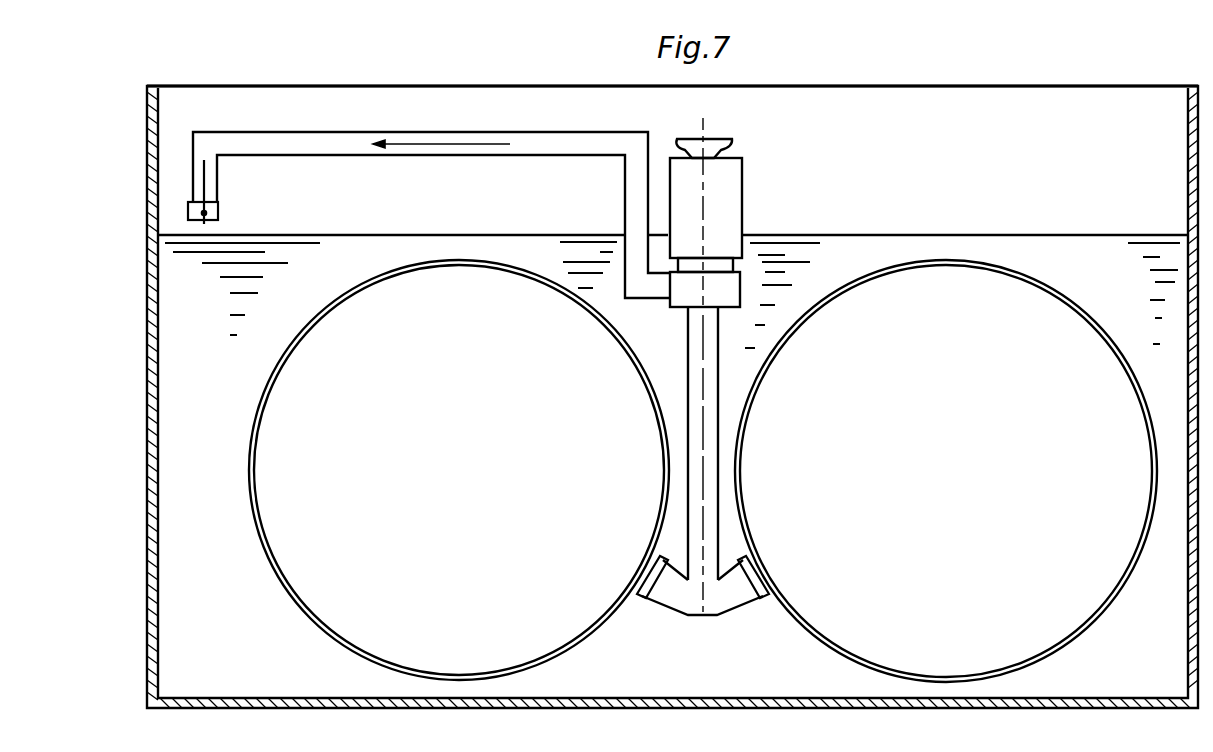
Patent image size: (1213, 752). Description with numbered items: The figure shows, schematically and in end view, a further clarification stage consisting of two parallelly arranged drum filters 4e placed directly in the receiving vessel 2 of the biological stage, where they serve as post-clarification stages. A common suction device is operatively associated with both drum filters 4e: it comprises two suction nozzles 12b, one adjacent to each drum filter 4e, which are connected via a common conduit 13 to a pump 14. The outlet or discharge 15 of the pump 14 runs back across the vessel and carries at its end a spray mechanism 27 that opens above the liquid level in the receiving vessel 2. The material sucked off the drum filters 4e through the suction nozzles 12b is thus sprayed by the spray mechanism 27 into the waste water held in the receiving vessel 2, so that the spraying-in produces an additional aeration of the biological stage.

The receiving vessel 2 is at (250, 665).
The drum filter 4e is at (617, 331).
The suction nozzle 12b is at (642, 599).
The common conduit 13 is at (764, 327).
The pump 14 is at (735, 193).
The outlet or discharge line 15 is at (470, 153).
The spray mechanism 27 is at (218, 213).